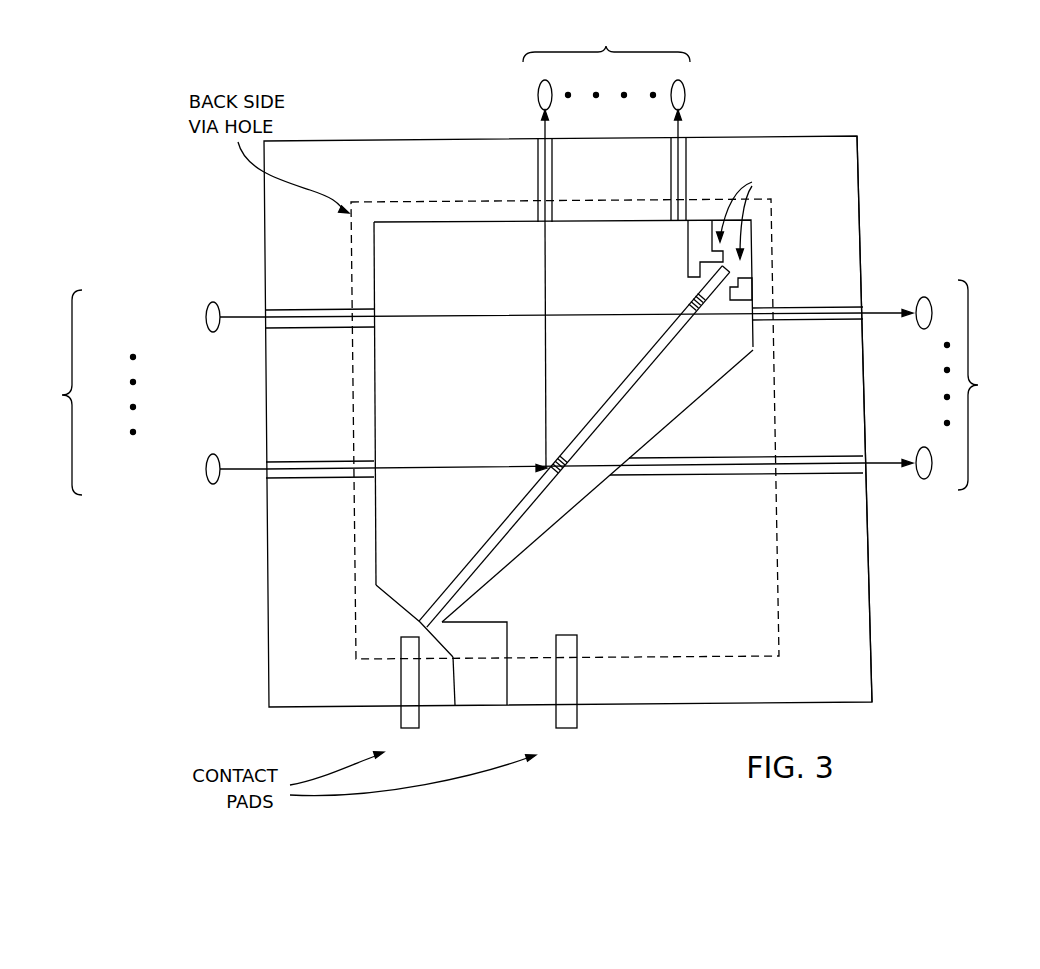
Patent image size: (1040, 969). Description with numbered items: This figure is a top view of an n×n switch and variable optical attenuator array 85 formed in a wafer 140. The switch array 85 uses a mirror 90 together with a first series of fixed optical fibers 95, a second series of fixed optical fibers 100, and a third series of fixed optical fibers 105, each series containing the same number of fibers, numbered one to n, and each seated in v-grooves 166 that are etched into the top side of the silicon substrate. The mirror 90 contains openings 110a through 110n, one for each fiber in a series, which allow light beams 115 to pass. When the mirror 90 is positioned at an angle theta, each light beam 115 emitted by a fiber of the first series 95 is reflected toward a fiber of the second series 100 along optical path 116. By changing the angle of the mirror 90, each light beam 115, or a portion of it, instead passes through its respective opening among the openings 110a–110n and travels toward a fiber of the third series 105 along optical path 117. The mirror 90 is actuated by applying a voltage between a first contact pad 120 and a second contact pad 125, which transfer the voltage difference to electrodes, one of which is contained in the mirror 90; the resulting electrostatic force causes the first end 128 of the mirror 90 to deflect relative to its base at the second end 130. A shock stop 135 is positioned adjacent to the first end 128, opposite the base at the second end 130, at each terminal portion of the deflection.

The n×n switch and variable optical attenuator array 85 is at (204, 192).
The mirror 90 is at (654, 360).
The first series of fixed optical fibers 95 is at (126, 392).
The second series of fixed optical fibers 100 is at (606, 63).
The third series of fixed optical fibers 105 is at (965, 385).
The mirror opening 110a is at (554, 455).
The mirror opening 110n is at (686, 306).
The light beam 115 is at (418, 316).
The optical path 116 is at (545, 302).
The optical path 117 is at (746, 320).
The first contact pad 120 is at (396, 760).
The second contact pad 125 is at (551, 760).
The first end of mirror 128 is at (733, 267).
The second end of mirror 130 is at (414, 612).
The shock stop 135 is at (702, 222).
The wafer 140 is at (868, 580).
The v-grooves 166 is at (537, 138).